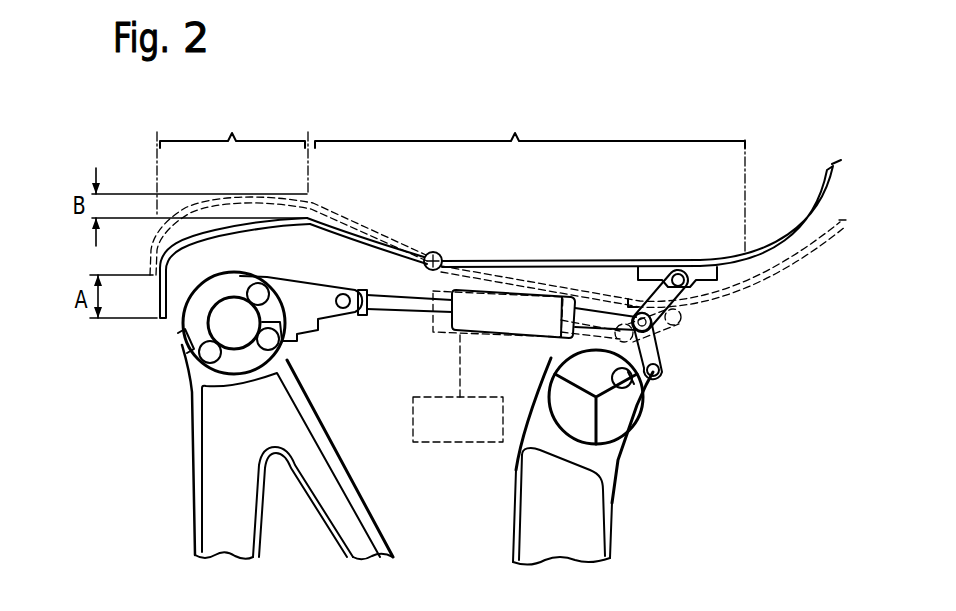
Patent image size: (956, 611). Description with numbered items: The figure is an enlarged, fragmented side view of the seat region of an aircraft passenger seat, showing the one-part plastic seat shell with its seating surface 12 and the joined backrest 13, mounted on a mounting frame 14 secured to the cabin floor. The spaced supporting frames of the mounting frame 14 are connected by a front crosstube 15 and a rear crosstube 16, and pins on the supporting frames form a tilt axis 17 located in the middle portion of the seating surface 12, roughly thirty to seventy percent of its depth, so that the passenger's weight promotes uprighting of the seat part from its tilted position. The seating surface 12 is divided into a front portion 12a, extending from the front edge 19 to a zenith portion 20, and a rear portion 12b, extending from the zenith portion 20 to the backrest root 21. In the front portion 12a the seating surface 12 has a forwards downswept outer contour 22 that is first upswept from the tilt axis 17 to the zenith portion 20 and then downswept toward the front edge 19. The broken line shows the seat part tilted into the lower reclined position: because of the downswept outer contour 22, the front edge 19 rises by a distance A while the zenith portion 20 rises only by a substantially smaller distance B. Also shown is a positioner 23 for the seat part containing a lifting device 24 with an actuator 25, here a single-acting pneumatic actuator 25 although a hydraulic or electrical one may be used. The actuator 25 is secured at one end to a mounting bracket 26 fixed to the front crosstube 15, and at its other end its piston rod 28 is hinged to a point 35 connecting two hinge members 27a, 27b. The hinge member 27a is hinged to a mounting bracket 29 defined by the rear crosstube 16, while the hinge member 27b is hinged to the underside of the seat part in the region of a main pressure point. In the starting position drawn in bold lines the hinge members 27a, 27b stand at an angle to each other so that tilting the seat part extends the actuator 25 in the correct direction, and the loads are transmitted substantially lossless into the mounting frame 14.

The seating surface 12 is at (507, 257).
The front portion 12a is at (232, 159).
The rear portion 12b is at (530, 177).
The backrest 13 is at (817, 187).
The mounting frame 14 is at (193, 497).
The front crosstube 15 is at (213, 337).
The rear crosstube 16 is at (632, 437).
The tilt axis 17 is at (441, 252).
The front edge 19 is at (157, 318).
The zenith portion 20 is at (313, 207).
The backrest root 21 is at (740, 254).
The outer contour 22 is at (203, 232).
The positioner 23 is at (441, 441).
The lifting device 24 is at (429, 334).
The actuator 25 is at (503, 315).
The mounting bracket 26 is at (294, 284).
The hinge member 27a is at (663, 347).
The hinge member 27b is at (684, 301).
The piston rod 28 is at (592, 306).
The mounting bracket 29 is at (650, 387).
The point 35 is at (631, 303).